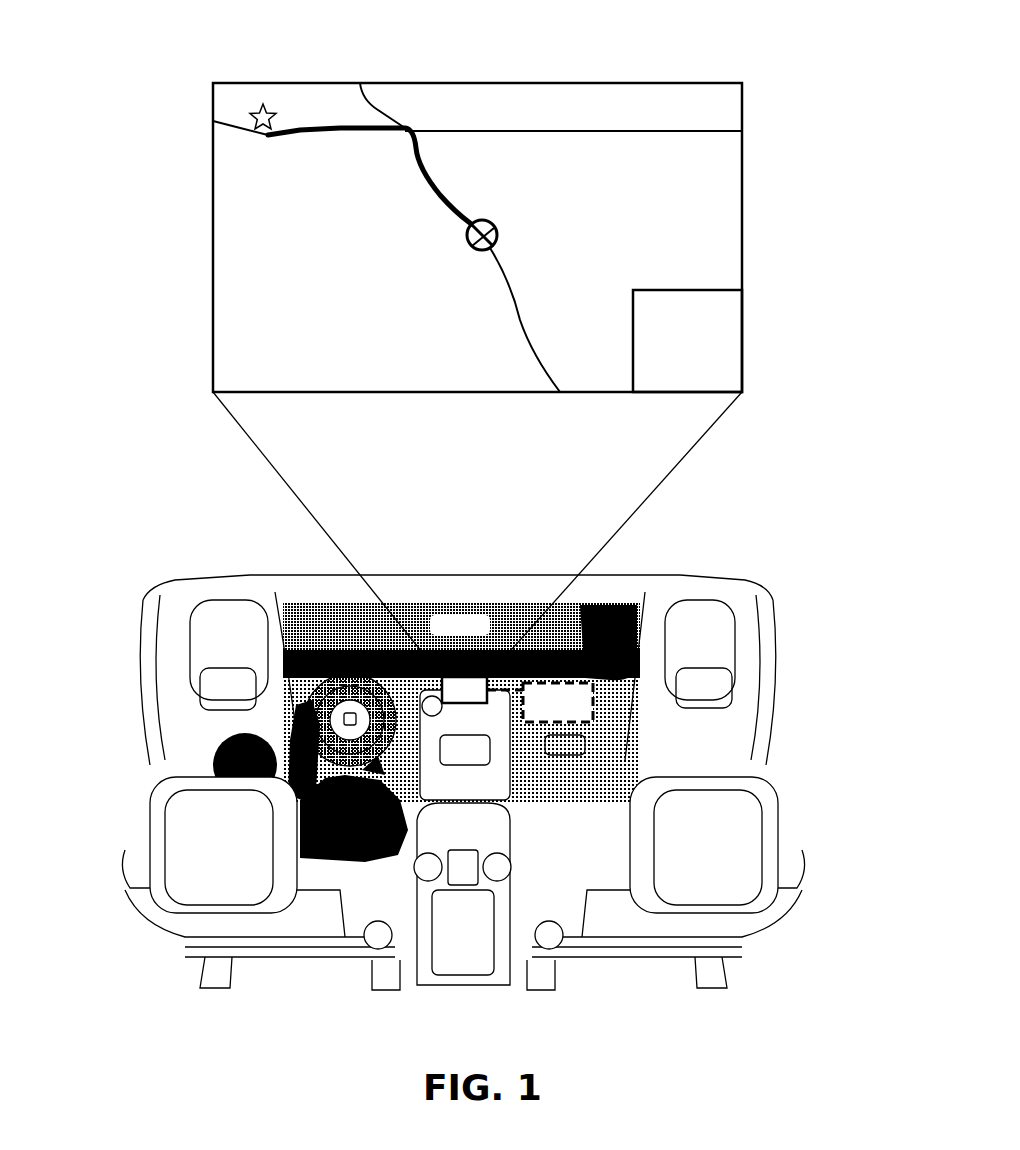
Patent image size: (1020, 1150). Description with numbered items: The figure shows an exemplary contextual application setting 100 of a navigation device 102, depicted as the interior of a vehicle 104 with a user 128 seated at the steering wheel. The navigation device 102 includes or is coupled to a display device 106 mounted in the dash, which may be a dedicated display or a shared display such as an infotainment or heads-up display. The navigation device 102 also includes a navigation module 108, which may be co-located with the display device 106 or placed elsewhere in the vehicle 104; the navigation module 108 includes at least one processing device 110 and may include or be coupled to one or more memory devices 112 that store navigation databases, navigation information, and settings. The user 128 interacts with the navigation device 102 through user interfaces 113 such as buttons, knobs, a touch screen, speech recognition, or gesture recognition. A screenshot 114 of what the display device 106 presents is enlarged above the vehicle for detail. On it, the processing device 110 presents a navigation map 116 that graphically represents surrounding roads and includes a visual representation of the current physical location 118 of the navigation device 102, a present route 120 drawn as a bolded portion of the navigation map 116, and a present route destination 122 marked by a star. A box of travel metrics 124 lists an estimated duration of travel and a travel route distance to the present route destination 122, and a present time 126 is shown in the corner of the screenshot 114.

The contextual application setting 100 is at (483, 1050).
The navigation device 102 is at (620, 607).
The vehicle 104 is at (735, 975).
The display device 106 is at (442, 677).
The navigation module 108 is at (632, 660).
The processing device 110 is at (573, 706).
The memory device 112 is at (575, 712).
The user interface 113 is at (447, 718).
The screenshot 114 is at (210, 237).
The navigation map 116 is at (232, 173).
The current physical location 118 is at (500, 222).
The present route 120 is at (420, 172).
The present route destination 122 is at (275, 110).
The travel metrics 124 is at (738, 329).
The present time 126 is at (220, 374).
The user 128 is at (217, 743).